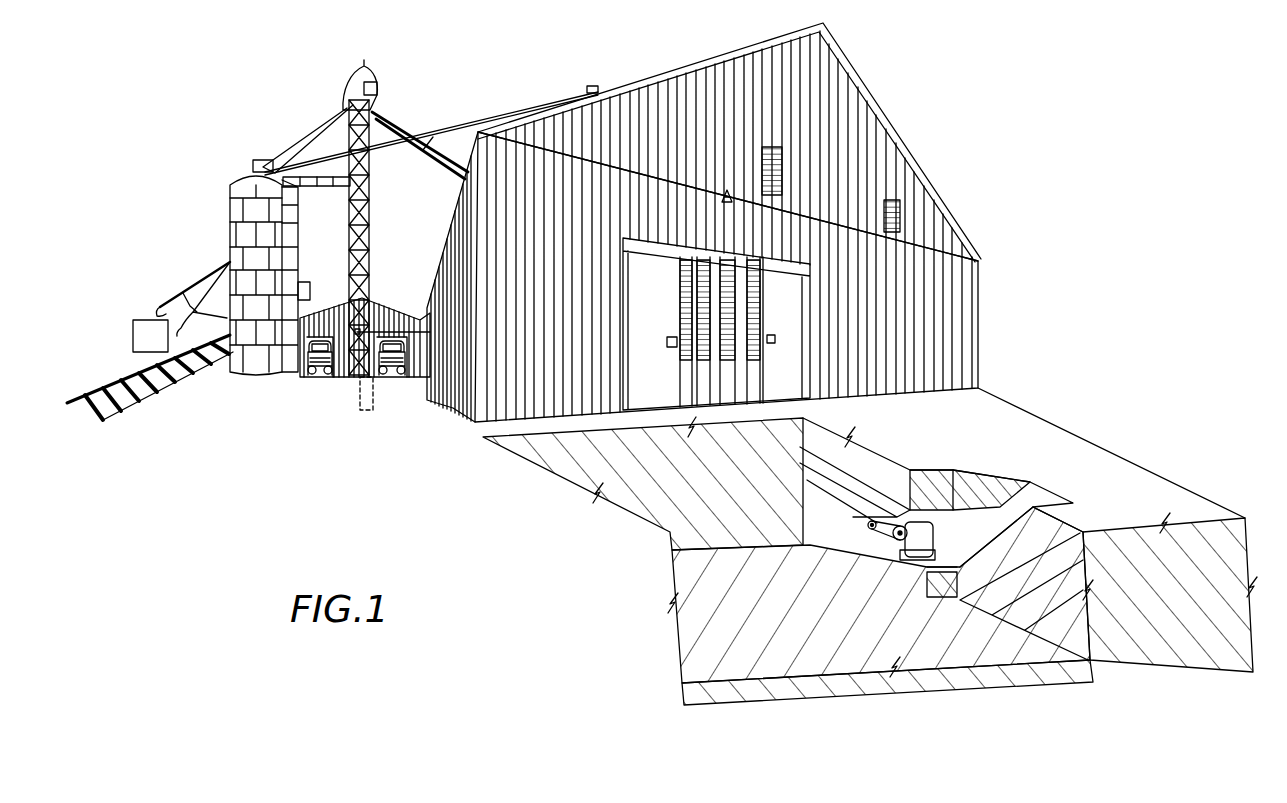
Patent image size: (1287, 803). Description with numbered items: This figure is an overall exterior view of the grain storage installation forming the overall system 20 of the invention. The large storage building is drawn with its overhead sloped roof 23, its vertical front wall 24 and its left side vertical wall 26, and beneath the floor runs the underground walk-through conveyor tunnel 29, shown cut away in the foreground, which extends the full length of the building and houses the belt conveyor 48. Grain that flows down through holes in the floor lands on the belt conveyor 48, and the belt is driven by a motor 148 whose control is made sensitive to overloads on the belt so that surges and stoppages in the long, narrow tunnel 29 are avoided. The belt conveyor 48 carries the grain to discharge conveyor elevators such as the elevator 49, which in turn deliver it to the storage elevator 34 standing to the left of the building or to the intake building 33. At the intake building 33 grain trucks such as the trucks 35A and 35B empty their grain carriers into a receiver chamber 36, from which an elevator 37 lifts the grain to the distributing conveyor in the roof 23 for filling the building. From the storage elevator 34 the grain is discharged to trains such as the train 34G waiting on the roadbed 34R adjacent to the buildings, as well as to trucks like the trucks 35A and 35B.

The overall system 20 is at (1000, 264).
The sloped roof 23 is at (948, 228).
The vertical front wall 24 is at (970, 351).
The left side vertical wall 26 is at (443, 392).
The underground walk-through conveyor tunnel 29 is at (940, 517).
The intake building 33 is at (378, 300).
The storage elevator 34 is at (297, 216).
The train 34G is at (135, 322).
The roadbed 34R is at (153, 393).
The grain truck 35A is at (307, 378).
The grain truck 35B is at (373, 378).
The receiver chamber 36 is at (373, 390).
The elevator 37 is at (371, 213).
The belt conveyor 48 is at (847, 497).
The discharge conveyor elevator 49 is at (592, 88).
The motor 148 is at (925, 537).